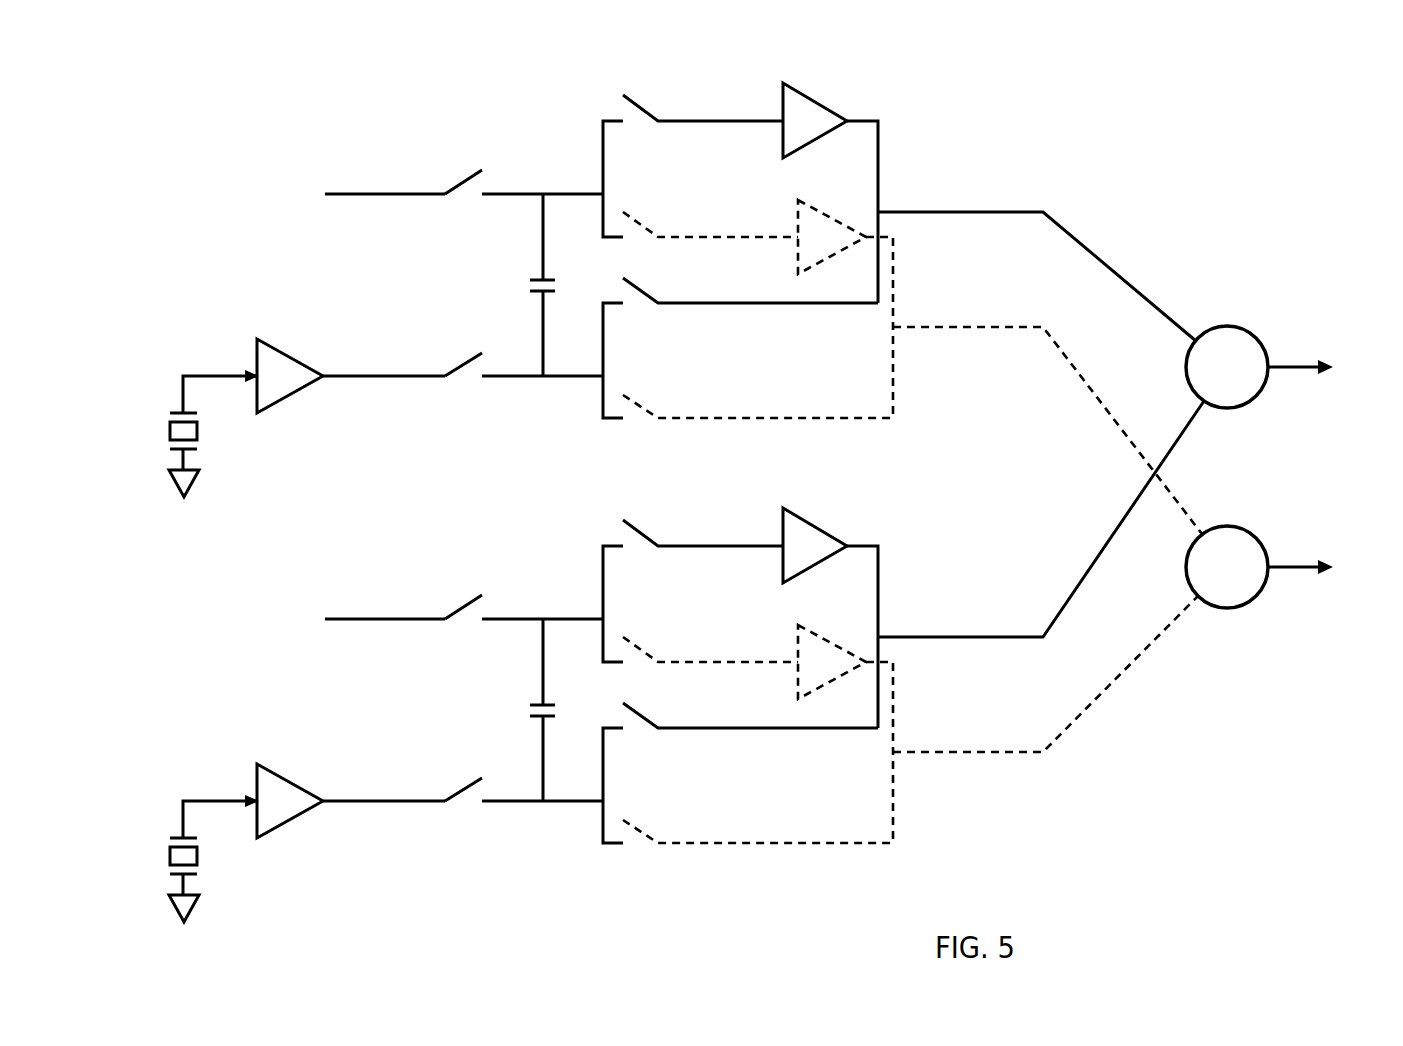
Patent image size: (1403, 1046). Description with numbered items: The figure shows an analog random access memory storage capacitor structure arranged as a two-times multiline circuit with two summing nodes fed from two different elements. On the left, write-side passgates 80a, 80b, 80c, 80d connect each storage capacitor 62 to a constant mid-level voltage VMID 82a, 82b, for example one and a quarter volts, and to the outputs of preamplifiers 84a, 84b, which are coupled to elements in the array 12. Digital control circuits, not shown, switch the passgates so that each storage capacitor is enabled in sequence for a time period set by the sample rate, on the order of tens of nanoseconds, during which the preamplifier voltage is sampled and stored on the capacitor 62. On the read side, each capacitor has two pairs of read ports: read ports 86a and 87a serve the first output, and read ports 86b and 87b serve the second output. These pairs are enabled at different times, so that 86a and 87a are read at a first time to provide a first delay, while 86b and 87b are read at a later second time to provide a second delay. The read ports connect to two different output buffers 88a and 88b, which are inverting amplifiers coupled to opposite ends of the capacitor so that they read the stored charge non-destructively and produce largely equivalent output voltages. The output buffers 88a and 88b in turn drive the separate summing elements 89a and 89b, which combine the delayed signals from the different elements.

The array 12 is at (191, 348).
The capacitor 62 is at (530, 282).
The write-side passgate 80a is at (460, 178).
The write-side passgate 80b is at (460, 357).
The write-side passgate 80c is at (458, 600).
The write-side passgate 80d is at (457, 777).
The VMID 82a is at (298, 180).
The VMID 82b is at (303, 610).
The preamplifier 84a is at (282, 343).
The preamplifier 84b is at (278, 765).
The read port 86a is at (640, 97).
The read port 86b is at (655, 223).
The read port 87a is at (665, 297).
The read port 87b is at (655, 407).
The output buffer 88a is at (830, 103).
The output buffer 88b is at (812, 203).
The summing element 89a is at (1263, 337).
The summing element 89b is at (1248, 527).